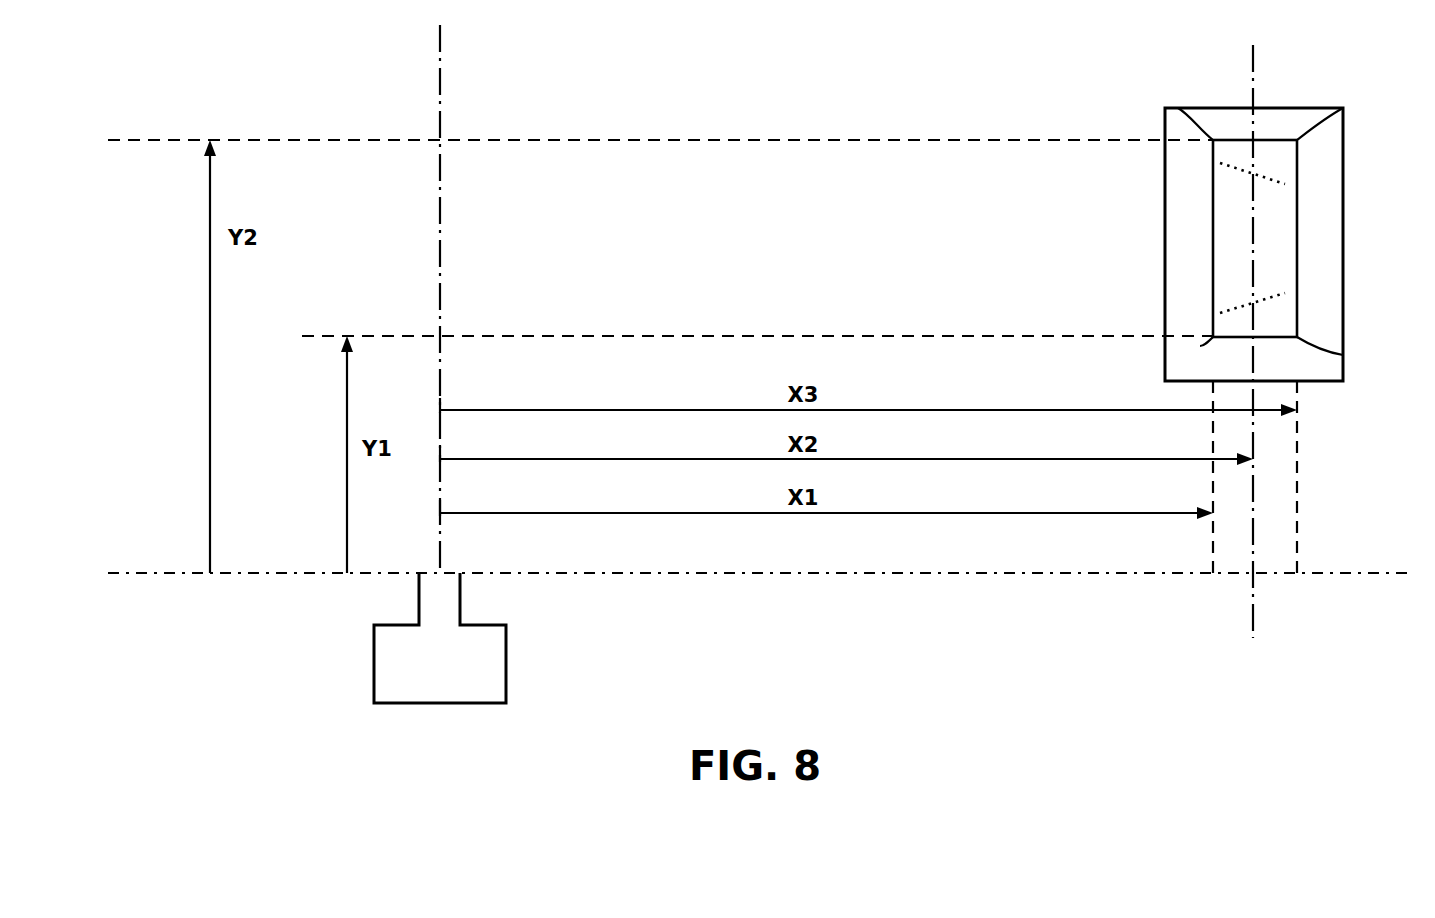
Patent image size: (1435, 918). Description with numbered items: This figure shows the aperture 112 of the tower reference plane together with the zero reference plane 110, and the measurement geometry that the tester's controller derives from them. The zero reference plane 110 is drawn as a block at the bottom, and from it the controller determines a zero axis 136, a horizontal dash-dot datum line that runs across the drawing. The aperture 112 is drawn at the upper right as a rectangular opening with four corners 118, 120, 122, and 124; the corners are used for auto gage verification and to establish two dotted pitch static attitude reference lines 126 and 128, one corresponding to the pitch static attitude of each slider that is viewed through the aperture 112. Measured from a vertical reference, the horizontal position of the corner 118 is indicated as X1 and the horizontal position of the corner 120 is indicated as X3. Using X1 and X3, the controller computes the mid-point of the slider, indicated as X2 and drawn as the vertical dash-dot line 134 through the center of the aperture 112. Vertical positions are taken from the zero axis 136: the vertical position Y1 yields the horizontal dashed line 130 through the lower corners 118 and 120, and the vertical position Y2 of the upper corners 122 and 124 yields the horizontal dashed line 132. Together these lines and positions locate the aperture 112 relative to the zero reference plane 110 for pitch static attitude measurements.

The zero reference plane 110 is at (461, 601).
The aperture 112 is at (1288, 238).
The corner 118 is at (1200, 346).
The corner 120 is at (1343, 355).
The corner 122 is at (1180, 108).
The corner 124 is at (1343, 108).
The pitch static attitude reference line 126 is at (1290, 302).
The pitch static attitude reference line 128 is at (1279, 178).
The horizontal line 130 is at (712, 336).
The horizontal line 132 is at (814, 140).
The line 134 is at (1257, 83).
The zero axis 136 is at (810, 574).